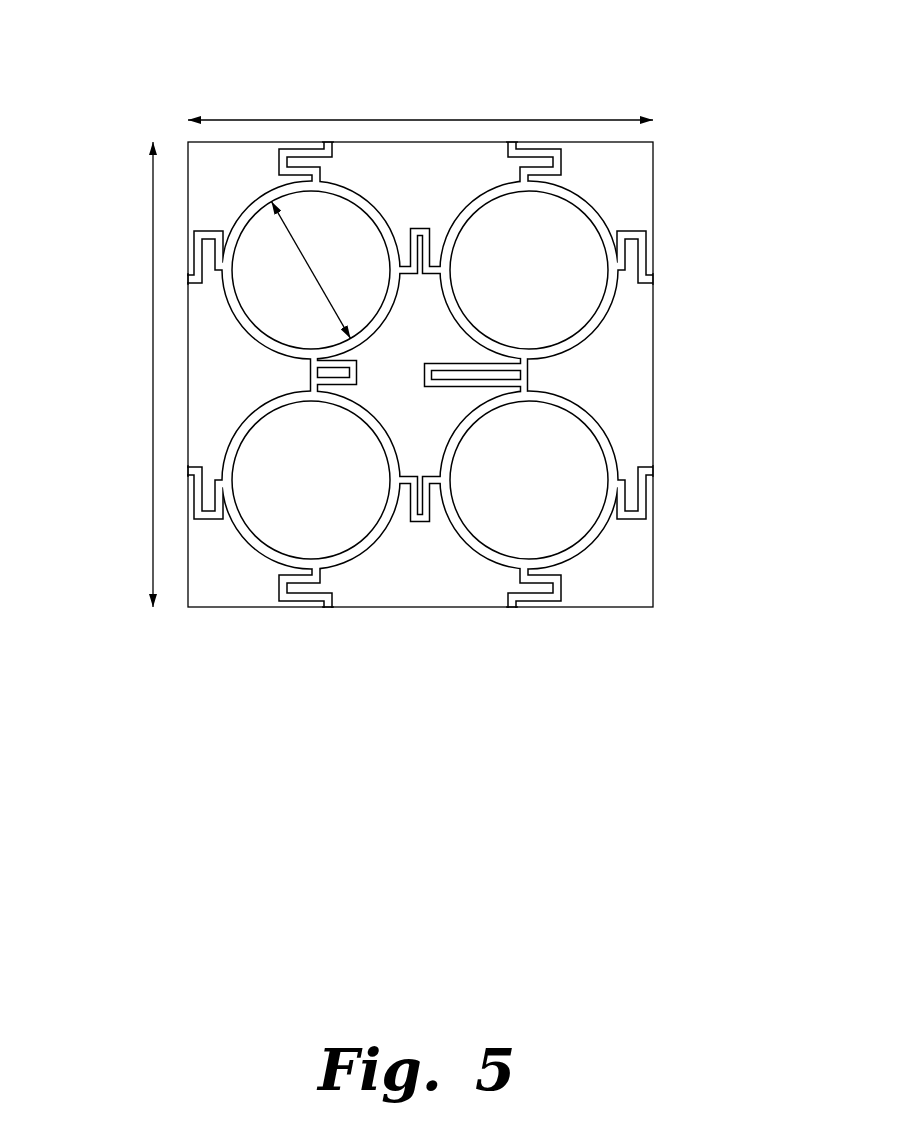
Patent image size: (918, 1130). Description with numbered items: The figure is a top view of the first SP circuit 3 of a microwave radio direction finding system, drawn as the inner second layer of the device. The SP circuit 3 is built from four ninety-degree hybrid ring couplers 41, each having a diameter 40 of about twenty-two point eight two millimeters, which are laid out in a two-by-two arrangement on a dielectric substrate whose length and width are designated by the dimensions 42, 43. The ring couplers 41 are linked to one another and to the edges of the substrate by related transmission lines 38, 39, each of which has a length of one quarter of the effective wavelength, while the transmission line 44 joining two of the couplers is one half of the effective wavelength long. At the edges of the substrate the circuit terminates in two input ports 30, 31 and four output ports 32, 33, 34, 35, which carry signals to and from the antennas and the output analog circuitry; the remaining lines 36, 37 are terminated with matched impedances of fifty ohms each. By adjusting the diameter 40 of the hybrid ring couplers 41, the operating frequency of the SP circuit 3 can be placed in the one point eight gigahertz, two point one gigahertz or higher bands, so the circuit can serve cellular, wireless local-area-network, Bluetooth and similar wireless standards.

The SP circuit 3 is at (451, 178).
The input port 30 is at (653, 478).
The input port 31 is at (188, 281).
The output port 32 is at (188, 470).
The output port 33 is at (653, 280).
The output port 34 is at (327, 607).
The output port 35 is at (515, 142).
The line 36 is at (513, 607).
The line 37 is at (328, 142).
The transmission line 38 is at (418, 227).
The transmission line 39 is at (280, 162).
The diameter 40 is at (317, 267).
The 90° hybrid ring coupler 41 is at (468, 426).
The length of the dielectric substrate 42 is at (150, 197).
The width of the dielectric substrate 43 is at (609, 121).
The transmission line 44 is at (537, 382).